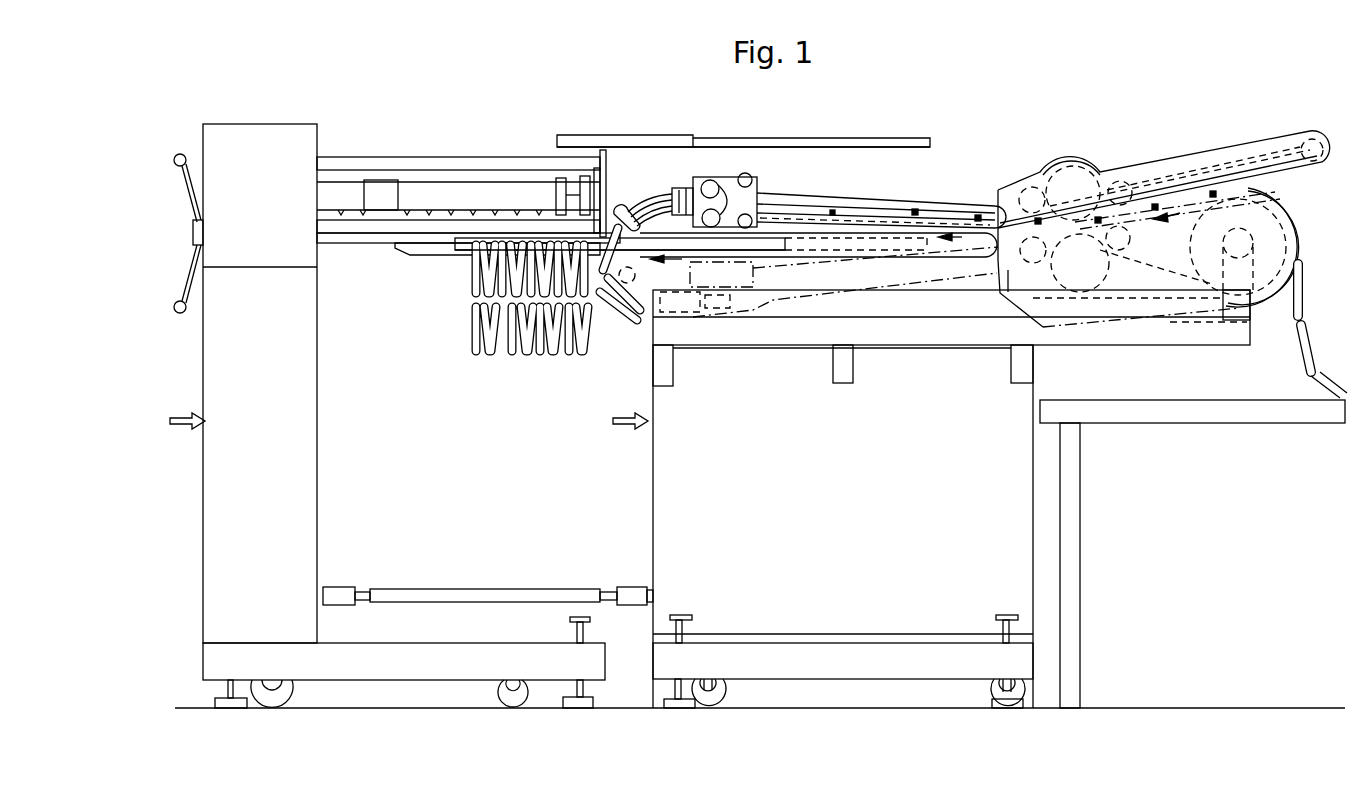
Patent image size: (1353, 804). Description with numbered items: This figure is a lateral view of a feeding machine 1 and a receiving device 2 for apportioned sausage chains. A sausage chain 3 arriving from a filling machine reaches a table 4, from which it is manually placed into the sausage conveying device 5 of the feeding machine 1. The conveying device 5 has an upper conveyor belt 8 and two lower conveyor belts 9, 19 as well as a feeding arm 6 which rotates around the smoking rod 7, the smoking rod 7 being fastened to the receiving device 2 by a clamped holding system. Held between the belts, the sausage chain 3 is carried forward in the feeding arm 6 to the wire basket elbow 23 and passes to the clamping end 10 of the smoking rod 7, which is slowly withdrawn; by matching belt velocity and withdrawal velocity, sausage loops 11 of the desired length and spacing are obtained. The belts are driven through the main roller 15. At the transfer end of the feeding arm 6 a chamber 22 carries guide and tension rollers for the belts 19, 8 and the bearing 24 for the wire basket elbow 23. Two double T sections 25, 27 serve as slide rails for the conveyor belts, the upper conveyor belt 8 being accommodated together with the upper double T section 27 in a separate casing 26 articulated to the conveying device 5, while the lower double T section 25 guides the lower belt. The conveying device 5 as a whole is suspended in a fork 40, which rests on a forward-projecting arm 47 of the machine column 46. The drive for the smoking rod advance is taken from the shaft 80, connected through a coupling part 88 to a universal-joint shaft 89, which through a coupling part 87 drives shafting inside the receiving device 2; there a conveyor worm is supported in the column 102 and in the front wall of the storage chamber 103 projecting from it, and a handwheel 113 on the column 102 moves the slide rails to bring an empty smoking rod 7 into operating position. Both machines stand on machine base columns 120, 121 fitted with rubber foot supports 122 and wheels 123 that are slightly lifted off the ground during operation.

The feeding machine 1 is at (1038, 98).
The receiving device 2 is at (547, 100).
The sausage chain 3 is at (1313, 342).
The table 4 is at (1216, 408).
The sausage conveying device 5 is at (1127, 158).
The feeding arm 6 is at (811, 193).
The smoking rod 7 is at (803, 135).
The upper conveyor belt 8 is at (995, 198).
The lower conveyor belt 9 is at (1197, 193).
The clamping end 10 is at (462, 252).
The sausage loops 11 is at (547, 352).
The main roller 15 is at (1280, 230).
The lower conveyor belt 19 is at (835, 213).
The chamber 22 is at (760, 183).
The wire basket elbow 23 is at (636, 198).
The bearing 24 is at (686, 194).
The lower double T section 25 is at (866, 219).
The casing 26 is at (1067, 157).
The upper double T section 27 is at (922, 210).
The fork 40 is at (1305, 268).
The machine column 46 is at (1033, 480).
The arm 47 is at (1140, 333).
The shaft 80 is at (650, 588).
The coupling part 87 is at (342, 593).
The coupling part 88 is at (620, 592).
The universal-joint shaft 89 is at (462, 593).
The column 102 is at (303, 145).
The storage chamber 103 is at (437, 163).
The handwheel 113 is at (180, 314).
The machine base column 120 is at (810, 667).
The machine base column 121 is at (423, 670).
The foot supports 122 is at (580, 710).
The wheels 123 is at (508, 708).